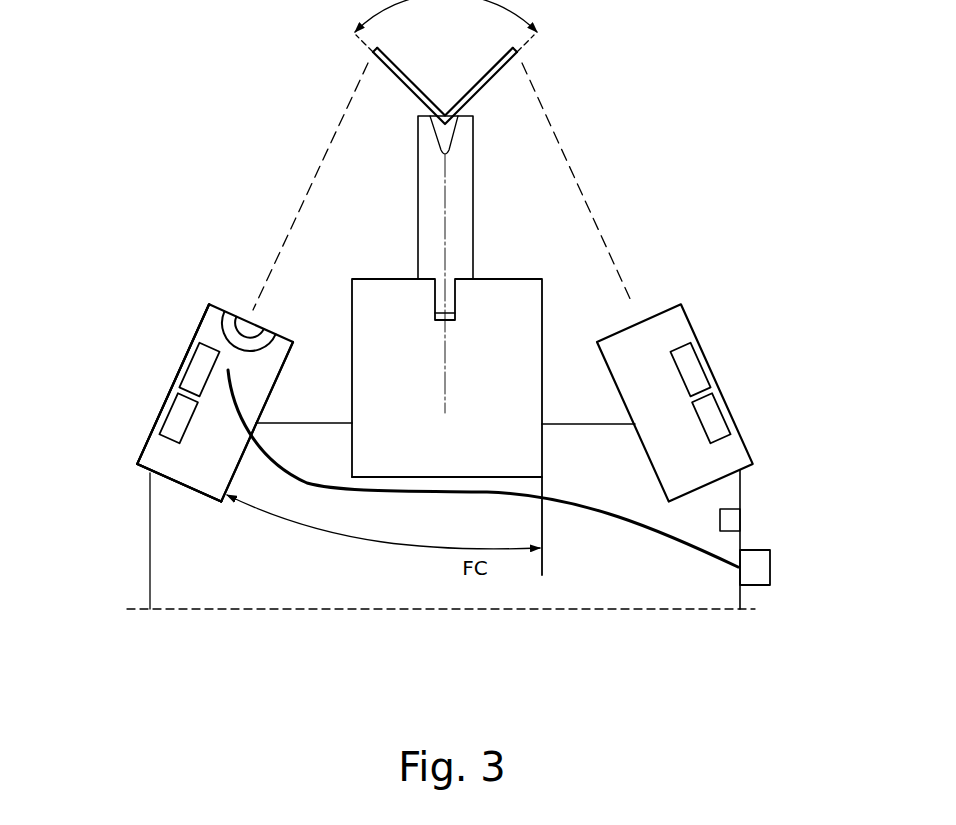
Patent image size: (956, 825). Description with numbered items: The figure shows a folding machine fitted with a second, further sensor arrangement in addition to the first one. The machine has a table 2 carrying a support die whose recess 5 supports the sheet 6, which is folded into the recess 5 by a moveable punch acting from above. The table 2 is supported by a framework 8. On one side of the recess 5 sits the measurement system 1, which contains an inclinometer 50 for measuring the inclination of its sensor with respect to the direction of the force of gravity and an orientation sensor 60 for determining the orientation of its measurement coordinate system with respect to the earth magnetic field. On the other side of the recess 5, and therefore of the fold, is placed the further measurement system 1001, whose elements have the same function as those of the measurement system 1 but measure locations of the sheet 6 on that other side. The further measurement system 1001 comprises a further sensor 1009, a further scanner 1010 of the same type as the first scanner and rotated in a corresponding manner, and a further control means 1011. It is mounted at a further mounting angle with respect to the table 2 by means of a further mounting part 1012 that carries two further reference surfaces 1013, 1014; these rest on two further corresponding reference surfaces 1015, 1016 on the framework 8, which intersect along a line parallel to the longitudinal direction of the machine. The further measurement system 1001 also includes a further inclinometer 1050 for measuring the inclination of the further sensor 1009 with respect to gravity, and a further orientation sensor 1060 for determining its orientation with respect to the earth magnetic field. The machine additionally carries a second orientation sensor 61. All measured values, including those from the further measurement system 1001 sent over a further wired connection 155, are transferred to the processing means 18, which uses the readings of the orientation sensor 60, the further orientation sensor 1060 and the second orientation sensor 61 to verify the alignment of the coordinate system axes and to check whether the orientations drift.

The measurement system 1 is at (683, 333).
The table 2 is at (518, 457).
The recess 5 is at (430, 133).
The sheet 6 is at (500, 67).
The framework 8 is at (707, 547).
The processing means 18 is at (770, 568).
The inclinometer 50 is at (708, 360).
The orientation sensor 60 is at (728, 410).
The second orientation sensor 61 is at (733, 518).
The further wired connection 155 is at (441, 541).
The further measurement system 1001 is at (212, 333).
The further sensor 1009 is at (228, 302).
The further scanner 1010 is at (246, 320).
The further control means 1011 is at (221, 322).
The further mounting part 1012 is at (224, 488).
The further reference surface 1013 is at (137, 468).
The further reference surface 1014 is at (224, 496).
The further corresponding reference surface 1015 is at (126, 395).
The further corresponding reference surface 1016 is at (151, 532).
The further inclinometer 1050 is at (192, 360).
The further orientation sensor 1060 is at (167, 412).